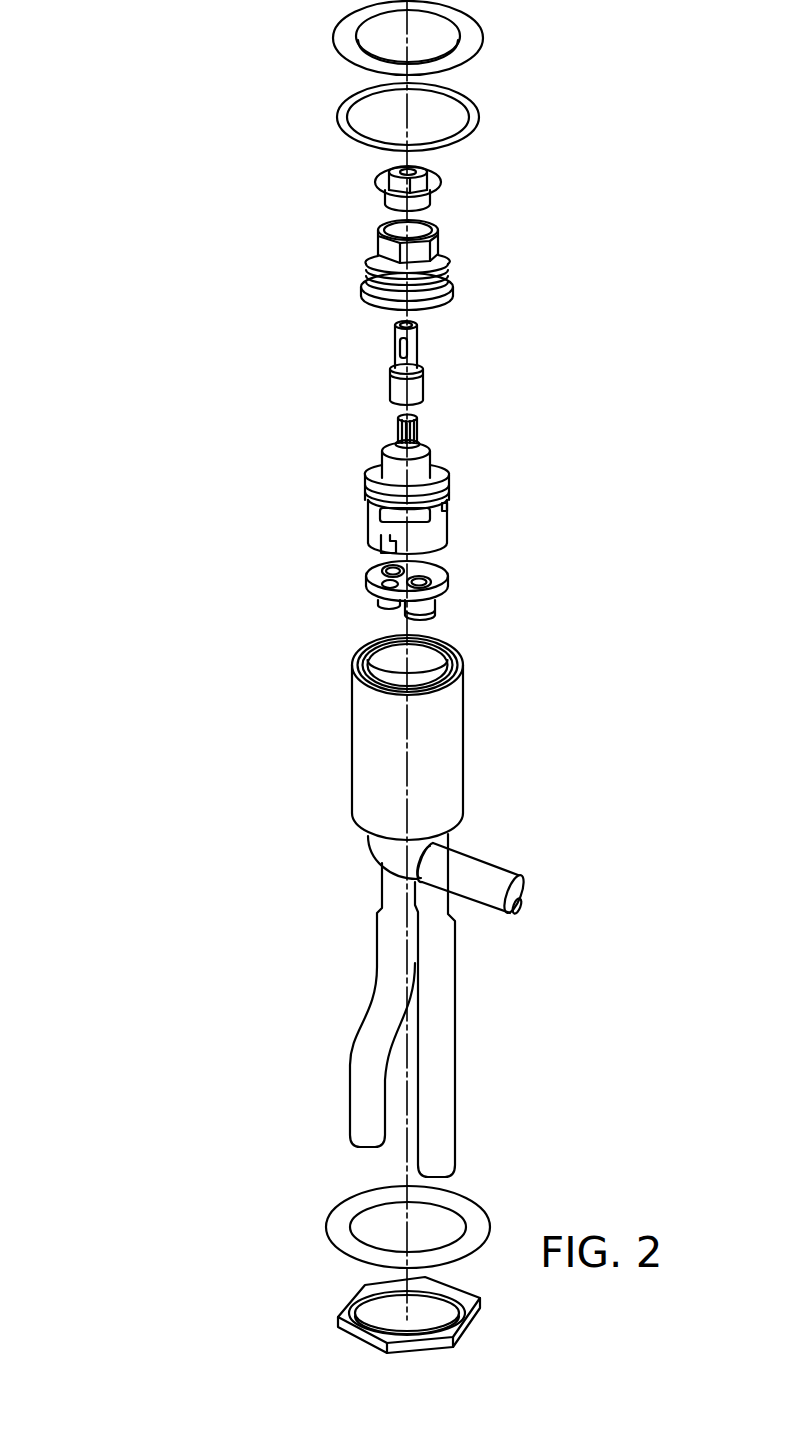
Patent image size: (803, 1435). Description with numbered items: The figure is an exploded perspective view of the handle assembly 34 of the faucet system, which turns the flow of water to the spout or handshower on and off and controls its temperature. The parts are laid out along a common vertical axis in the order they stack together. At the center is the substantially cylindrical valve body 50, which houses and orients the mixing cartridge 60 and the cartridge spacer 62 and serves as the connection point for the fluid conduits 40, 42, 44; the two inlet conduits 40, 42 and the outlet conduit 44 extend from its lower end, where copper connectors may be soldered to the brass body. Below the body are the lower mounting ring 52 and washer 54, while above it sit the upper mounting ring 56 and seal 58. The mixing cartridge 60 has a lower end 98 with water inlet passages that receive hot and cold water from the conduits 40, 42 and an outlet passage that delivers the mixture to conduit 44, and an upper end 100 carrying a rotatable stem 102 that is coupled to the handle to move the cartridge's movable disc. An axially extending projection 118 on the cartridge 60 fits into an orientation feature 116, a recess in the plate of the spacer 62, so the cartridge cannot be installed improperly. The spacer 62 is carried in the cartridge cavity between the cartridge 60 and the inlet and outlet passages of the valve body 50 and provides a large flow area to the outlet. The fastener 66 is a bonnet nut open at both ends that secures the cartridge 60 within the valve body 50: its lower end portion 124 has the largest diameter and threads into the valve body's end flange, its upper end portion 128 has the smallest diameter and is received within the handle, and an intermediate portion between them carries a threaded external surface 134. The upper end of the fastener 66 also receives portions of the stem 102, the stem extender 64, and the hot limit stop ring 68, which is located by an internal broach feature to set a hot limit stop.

The handle assembly 34 is at (70, 589).
The fluid conduit 40 is at (438, 1078).
The fluid conduit 42 is at (362, 1024).
The fluid conduit 44 is at (503, 883).
The valve body 50 is at (375, 725).
The lower mounting ring 52 is at (340, 1312).
The washer 54 is at (337, 1217).
The upper mounting ring 56 is at (347, 46).
The seal 58 is at (346, 113).
The mixing cartridge 60 is at (401, 482).
The cartridge spacer 62 is at (374, 594).
The stem extender 64 is at (396, 345).
The fastener 66 is at (438, 271).
The hot limit stop ring 68 is at (378, 181).
The lower end of cartridge 98 is at (439, 525).
The upper end of cartridge 100 is at (418, 470).
The rotatable stem 102 is at (418, 426).
The orientation feature 116 is at (383, 582).
The axially extending projection 118 is at (326, 532).
The lower end portion of fastener 124 is at (447, 300).
The upper end portion of fastener 128 is at (437, 242).
The threaded external surface 134 is at (447, 270).